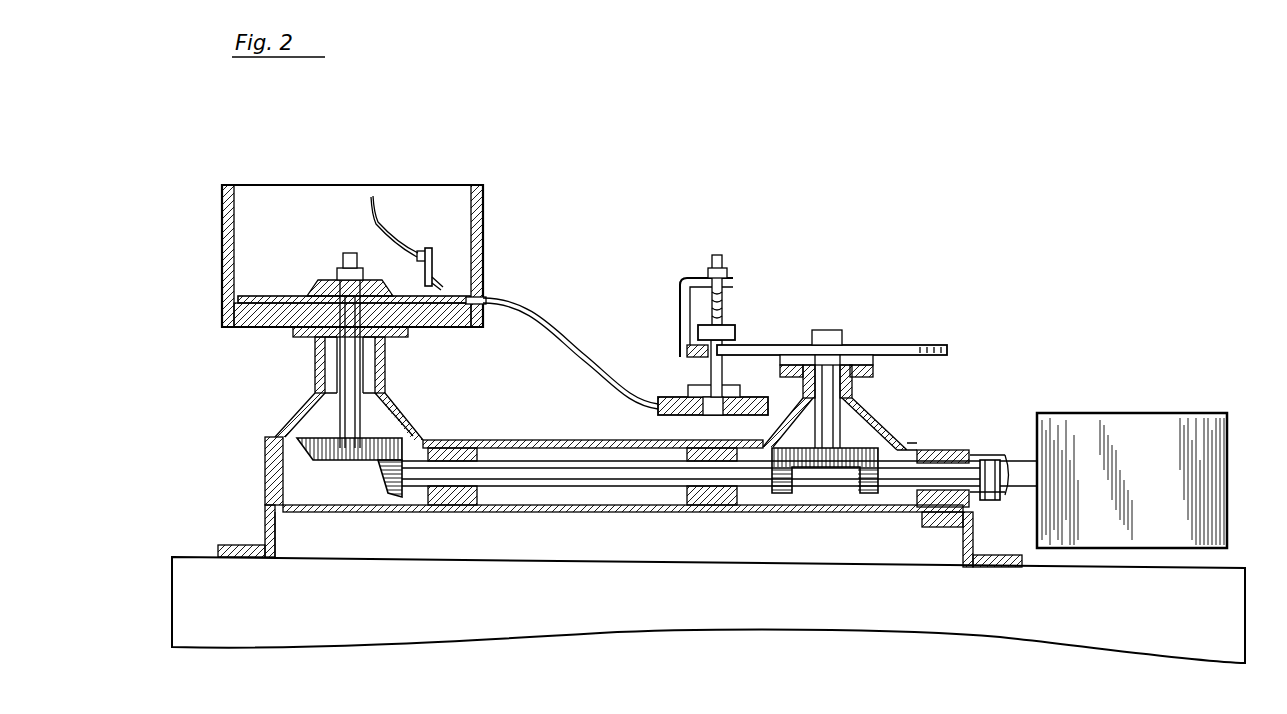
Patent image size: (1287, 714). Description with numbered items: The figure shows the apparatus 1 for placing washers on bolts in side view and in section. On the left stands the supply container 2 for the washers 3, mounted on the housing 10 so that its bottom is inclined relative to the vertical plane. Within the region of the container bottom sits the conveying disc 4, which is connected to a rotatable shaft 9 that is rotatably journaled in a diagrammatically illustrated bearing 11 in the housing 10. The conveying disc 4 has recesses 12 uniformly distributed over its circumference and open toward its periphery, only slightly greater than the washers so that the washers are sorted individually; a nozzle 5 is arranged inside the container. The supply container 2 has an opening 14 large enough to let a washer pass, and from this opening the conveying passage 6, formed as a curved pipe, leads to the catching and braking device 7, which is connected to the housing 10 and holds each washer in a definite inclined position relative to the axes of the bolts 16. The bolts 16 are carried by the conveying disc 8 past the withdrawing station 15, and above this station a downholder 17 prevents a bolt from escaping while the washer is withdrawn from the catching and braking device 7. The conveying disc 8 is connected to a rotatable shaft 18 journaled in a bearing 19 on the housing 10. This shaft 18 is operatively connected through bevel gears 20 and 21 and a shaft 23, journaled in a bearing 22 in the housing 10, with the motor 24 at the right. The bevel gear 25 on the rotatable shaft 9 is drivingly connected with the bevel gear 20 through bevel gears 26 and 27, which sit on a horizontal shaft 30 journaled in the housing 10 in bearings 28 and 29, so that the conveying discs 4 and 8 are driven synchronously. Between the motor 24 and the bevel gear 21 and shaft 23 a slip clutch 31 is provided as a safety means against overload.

The apparatus 1 is at (628, 196).
The supply container 2 is at (222, 217).
The washers 3 is at (240, 300).
The conveying disc 4 is at (290, 296).
The nozzle 5 is at (429, 250).
The conveying passage 6 is at (577, 364).
The catching and braking device 7 is at (690, 403).
The conveying disc 8 is at (896, 352).
The rotatable shaft 9 is at (340, 352).
The housing 10 is at (550, 446).
The bearing 11 is at (375, 371).
The recesses 12 is at (249, 327).
The opening 14 is at (488, 300).
The withdrawing station 15 is at (718, 415).
The bolts 16 is at (722, 380).
The downholder 17 is at (728, 336).
The rotatable shaft 18 is at (835, 330).
The bearing 19 is at (862, 388).
The bevel gear 20 is at (832, 469).
The bevel gear 21 is at (868, 495).
The bearing 22 is at (940, 513).
The shaft 23 is at (918, 468).
The motor 24 is at (1108, 428).
The bevel gear 25 is at (312, 459).
The bevel gear 26 is at (385, 493).
The bevel gear 27 is at (782, 495).
The bearing 28 is at (452, 500).
The bearing 29 is at (712, 500).
The shaft 30 is at (582, 483).
The slip clutch 31 is at (992, 466).